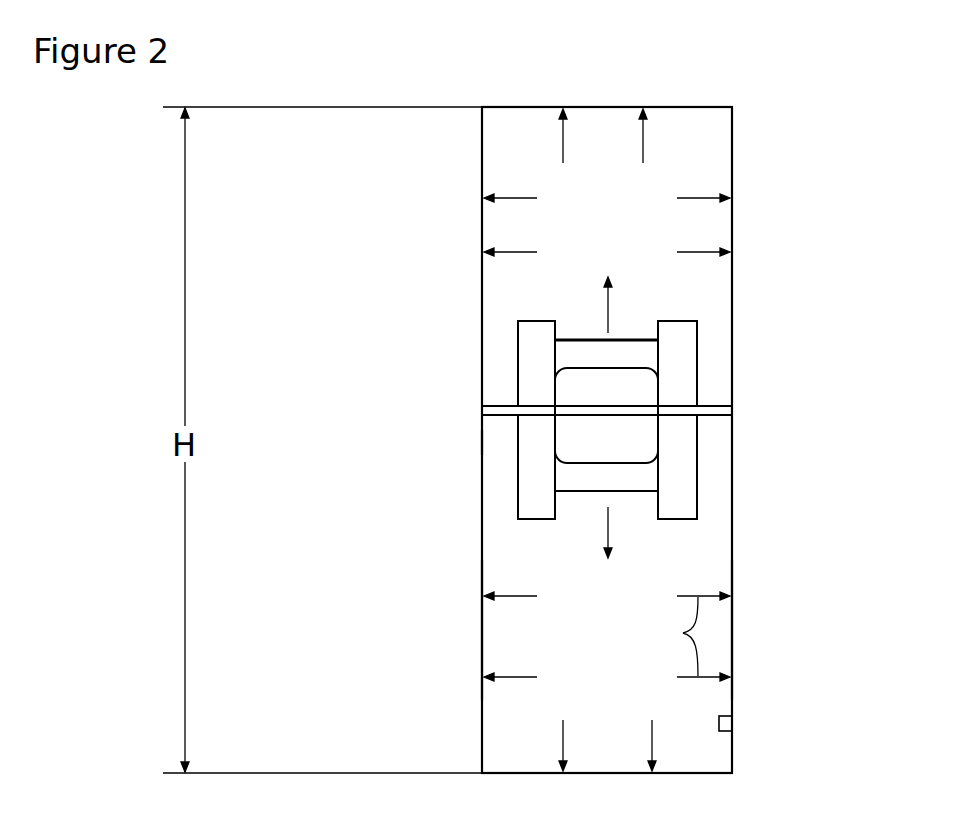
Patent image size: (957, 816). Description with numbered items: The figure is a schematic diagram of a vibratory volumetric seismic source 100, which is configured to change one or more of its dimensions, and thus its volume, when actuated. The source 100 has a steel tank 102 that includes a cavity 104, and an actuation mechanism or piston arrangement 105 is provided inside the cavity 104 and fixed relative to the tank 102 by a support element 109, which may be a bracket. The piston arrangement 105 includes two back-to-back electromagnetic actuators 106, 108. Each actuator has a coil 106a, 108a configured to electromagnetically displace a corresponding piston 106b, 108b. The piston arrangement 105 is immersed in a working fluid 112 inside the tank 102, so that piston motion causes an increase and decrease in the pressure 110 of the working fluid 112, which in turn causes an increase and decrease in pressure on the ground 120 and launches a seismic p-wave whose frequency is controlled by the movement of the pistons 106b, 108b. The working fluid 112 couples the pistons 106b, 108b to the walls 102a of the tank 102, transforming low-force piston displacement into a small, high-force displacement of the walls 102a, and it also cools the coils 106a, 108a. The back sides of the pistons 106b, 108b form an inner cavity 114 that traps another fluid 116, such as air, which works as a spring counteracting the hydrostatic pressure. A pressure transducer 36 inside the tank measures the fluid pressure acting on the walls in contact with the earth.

The source 100 is at (632, 87).
The tank 102 is at (482, 157).
The walls 102a is at (482, 630).
The cavity 104 is at (630, 218).
The actuation mechanism 105 is at (508, 443).
The actuator 106 is at (703, 372).
The coil 106a is at (535, 358).
The piston 106b is at (580, 352).
The actuator 108 is at (703, 472).
The coil 108a is at (527, 463).
The piston 108b is at (568, 483).
The support element 109 is at (721, 405).
The pressure 110 is at (668, 636).
The working fluid 112 is at (522, 701).
The inner cavity 114 is at (623, 430).
The fluid 116 is at (625, 403).
The ground 120 is at (815, 434).
The pressure transducer 36 is at (726, 724).